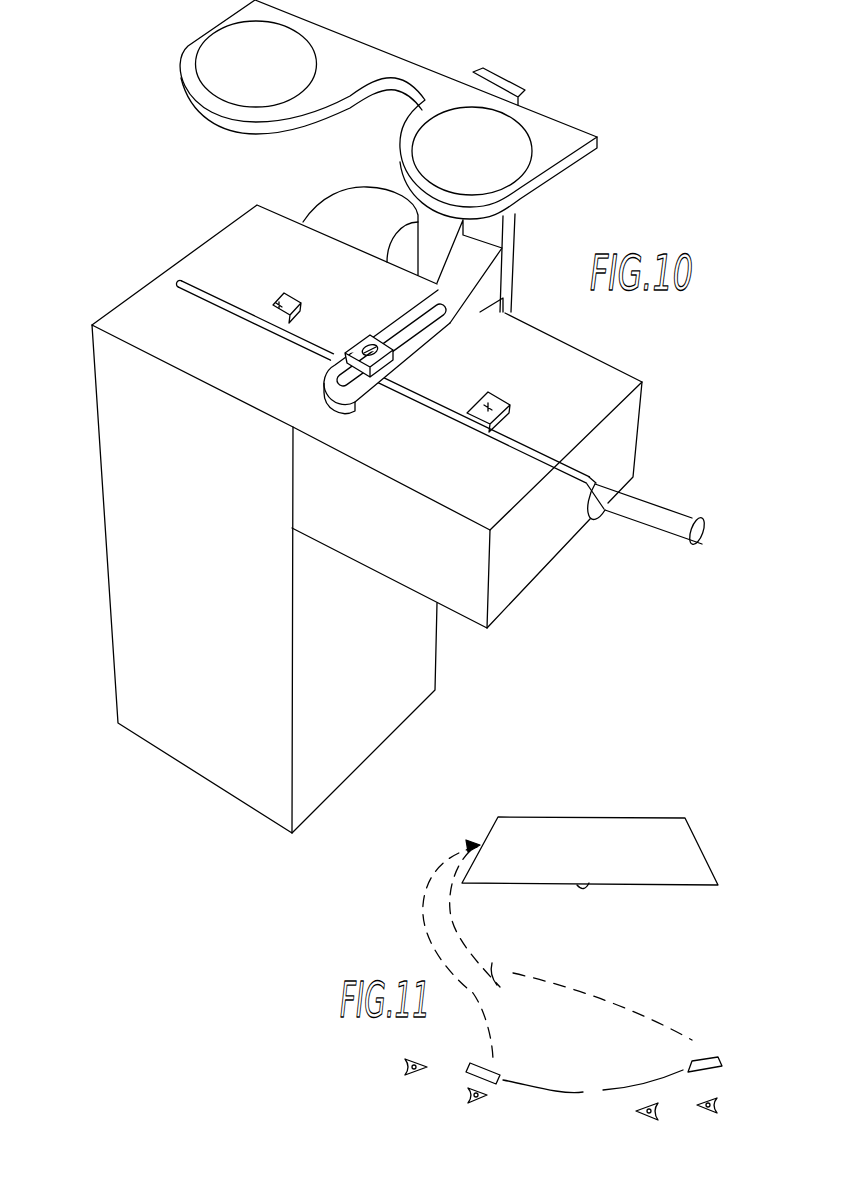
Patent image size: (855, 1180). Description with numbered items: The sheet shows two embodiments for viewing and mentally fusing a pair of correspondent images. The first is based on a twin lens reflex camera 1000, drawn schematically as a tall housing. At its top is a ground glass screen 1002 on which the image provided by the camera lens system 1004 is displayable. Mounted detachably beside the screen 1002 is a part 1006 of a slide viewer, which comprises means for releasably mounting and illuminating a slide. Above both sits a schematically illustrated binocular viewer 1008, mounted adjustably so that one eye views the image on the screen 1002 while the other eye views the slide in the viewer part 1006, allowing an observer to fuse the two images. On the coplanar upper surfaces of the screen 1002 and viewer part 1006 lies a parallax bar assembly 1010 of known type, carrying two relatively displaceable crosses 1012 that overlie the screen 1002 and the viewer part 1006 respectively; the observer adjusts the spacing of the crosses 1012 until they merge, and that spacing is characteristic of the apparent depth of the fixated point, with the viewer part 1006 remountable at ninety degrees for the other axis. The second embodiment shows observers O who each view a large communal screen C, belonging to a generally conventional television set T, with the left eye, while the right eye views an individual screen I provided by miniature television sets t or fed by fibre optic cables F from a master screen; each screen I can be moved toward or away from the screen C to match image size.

In FIG. 10, the twin lens reflex camera 1000 is at (110, 637).
In FIG. 10, the ground glass screen 1002 is at (148, 305).
In FIG. 10, the camera lens system 1004 is at (342, 193).
In FIG. 10, the slide viewer part 1006 is at (533, 570).
In FIG. 10, the binocular viewer 1008 is at (457, 70).
In FIG. 10, the parallax bar assembly 1010 is at (667, 531).
In FIG. 10, the crosses 1012 is at (293, 297).
In FIG. 11, the television set T is at (698, 855).
In FIG. 11, the communal screen C is at (587, 883).
In FIG. 11, the fibre optic cables F is at (465, 988).
In FIG. 11, the miniature television sets t is at (477, 1062).
In FIG. 11, the individual screen I is at (593, 1087).
In FIG. 11, the observers O is at (438, 1091).